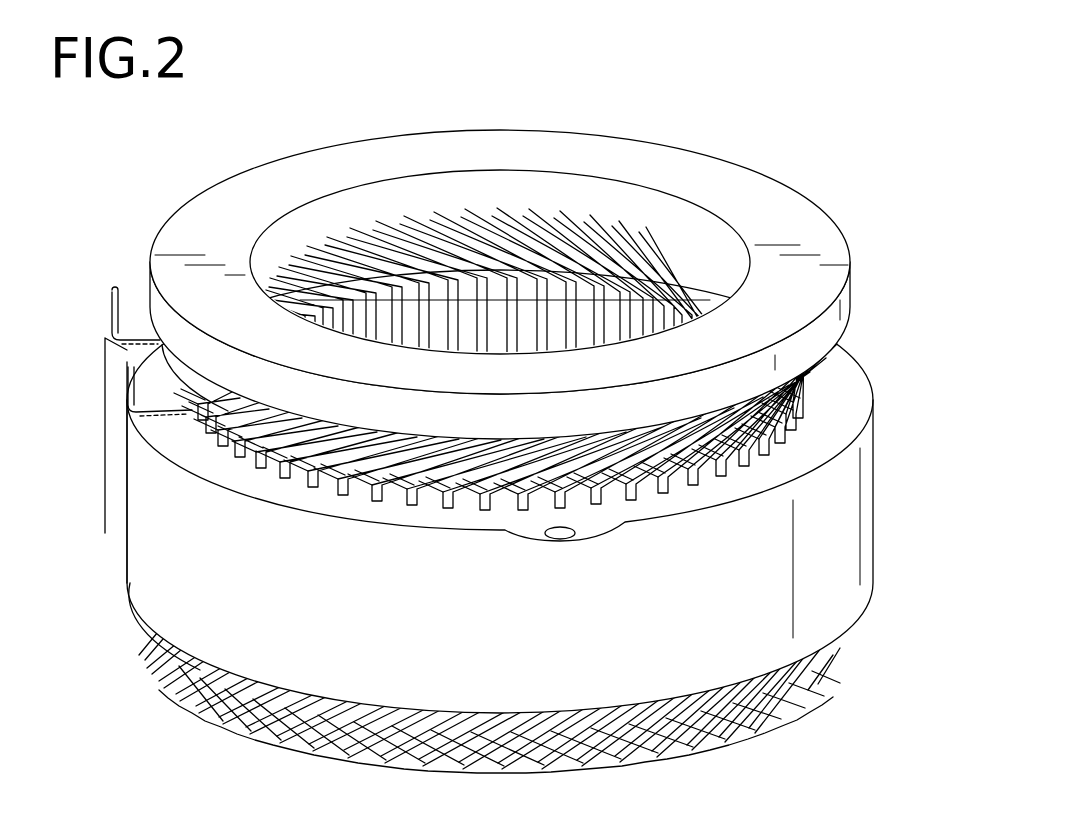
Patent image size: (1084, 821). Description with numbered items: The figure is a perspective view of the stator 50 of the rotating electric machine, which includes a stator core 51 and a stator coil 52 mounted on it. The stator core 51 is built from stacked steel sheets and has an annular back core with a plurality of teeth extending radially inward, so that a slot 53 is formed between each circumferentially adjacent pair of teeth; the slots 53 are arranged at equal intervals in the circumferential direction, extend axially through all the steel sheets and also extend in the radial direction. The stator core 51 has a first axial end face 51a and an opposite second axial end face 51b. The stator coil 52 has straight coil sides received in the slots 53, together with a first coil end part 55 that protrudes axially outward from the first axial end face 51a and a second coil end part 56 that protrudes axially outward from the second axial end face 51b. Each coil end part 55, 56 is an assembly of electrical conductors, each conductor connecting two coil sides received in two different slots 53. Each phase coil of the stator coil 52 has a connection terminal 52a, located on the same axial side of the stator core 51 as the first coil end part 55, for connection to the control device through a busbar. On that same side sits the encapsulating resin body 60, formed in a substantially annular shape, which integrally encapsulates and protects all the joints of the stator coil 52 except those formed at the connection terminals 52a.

The stator 50 is at (506, 454).
The stator core 51 is at (874, 490).
The first axial end face 51a is at (177, 438).
The second axial end face 51b is at (148, 633).
The stator coil 52 is at (684, 753).
The connection terminal 52a is at (112, 310).
The slot 53 is at (578, 283).
The first coil end part 55 is at (842, 372).
The second coil end part 56 is at (816, 673).
The encapsulating resin body 60 is at (692, 178).